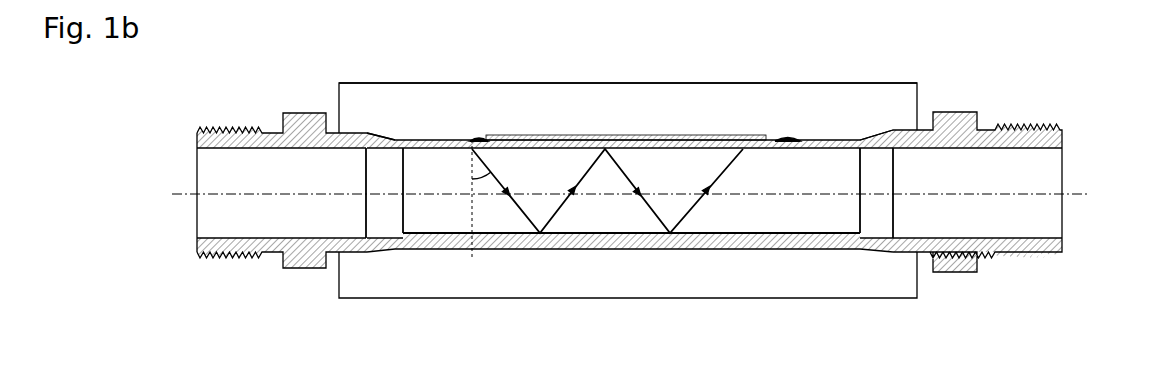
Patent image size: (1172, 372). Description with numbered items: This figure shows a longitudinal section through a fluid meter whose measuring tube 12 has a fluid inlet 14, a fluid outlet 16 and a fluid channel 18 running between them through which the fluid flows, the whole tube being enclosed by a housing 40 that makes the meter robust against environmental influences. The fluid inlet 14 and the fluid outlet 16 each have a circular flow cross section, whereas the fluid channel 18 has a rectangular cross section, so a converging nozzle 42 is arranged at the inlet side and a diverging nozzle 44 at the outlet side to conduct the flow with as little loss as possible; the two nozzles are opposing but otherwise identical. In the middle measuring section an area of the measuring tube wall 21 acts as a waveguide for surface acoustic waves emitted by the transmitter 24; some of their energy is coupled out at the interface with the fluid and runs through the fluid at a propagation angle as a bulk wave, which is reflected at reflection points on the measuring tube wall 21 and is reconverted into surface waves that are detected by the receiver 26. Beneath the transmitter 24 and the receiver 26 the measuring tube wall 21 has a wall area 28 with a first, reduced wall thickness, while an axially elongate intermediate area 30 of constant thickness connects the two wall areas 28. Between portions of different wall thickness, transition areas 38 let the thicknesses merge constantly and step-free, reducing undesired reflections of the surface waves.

The measuring tube 12 is at (943, 93).
The fluid inlet 14 is at (210, 182).
The fluid outlet 16 is at (1050, 200).
The fluid channel 18 is at (445, 186).
The measuring tube wall 21 is at (740, 250).
The transmitter 24 is at (478, 137).
The receiver 26 is at (790, 137).
The wall area 28 is at (503, 146).
The intermediate area 30 is at (568, 136).
The transition area 38 is at (376, 134).
The housing 40 is at (650, 82).
The converging nozzle 42 is at (380, 240).
The diverging nozzle 44 is at (873, 225).